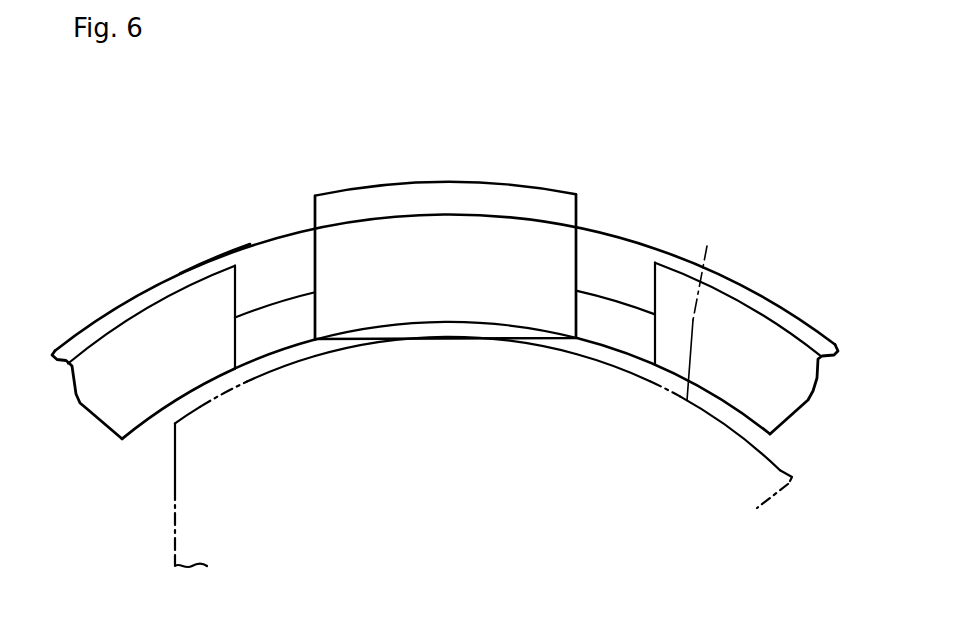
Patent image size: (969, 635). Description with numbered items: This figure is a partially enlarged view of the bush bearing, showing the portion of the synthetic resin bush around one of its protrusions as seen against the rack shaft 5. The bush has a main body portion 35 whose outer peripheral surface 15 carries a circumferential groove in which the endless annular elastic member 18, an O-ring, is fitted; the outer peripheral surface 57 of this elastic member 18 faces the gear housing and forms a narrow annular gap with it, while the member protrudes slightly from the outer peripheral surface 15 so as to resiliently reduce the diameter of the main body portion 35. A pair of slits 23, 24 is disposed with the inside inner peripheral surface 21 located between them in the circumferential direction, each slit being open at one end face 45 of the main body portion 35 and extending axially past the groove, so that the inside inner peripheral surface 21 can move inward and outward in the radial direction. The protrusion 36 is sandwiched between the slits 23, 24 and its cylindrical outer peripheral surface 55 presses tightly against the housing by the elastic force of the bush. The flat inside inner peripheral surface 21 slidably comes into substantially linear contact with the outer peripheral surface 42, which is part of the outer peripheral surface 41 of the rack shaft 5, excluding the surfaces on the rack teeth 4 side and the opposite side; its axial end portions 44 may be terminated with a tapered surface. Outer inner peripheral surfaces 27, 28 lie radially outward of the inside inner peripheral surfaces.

The rack teeth 4 is at (183, 492).
The rack shaft 5 is at (775, 468).
The outer peripheral surface 15 is at (806, 340).
The endless annular elastic member 18 is at (128, 309).
The inside inner peripheral surface 21 is at (540, 347).
The slit 23 is at (612, 279).
The slit 24 is at (272, 272).
The outer inner peripheral surface 27 is at (148, 422).
The outer inner peripheral surface 28 is at (735, 419).
The main body portion 35 is at (270, 330).
The protrusion 36 is at (361, 207).
The outer peripheral surface 41 is at (703, 311).
The outer peripheral surface 42 is at (447, 337).
The end portion 44 is at (460, 333).
The end face 45 is at (108, 363).
The outer peripheral surface 55 is at (514, 185).
The outer peripheral surface 57 is at (203, 260).